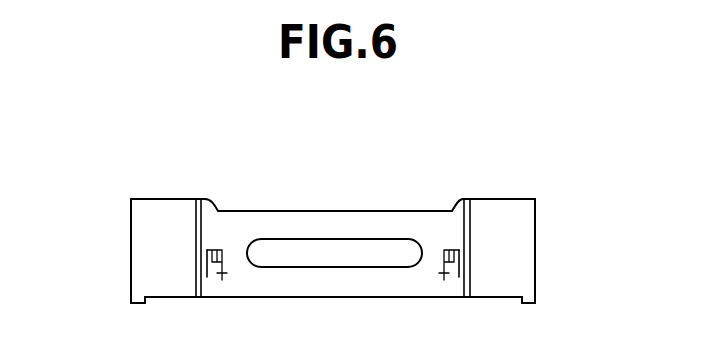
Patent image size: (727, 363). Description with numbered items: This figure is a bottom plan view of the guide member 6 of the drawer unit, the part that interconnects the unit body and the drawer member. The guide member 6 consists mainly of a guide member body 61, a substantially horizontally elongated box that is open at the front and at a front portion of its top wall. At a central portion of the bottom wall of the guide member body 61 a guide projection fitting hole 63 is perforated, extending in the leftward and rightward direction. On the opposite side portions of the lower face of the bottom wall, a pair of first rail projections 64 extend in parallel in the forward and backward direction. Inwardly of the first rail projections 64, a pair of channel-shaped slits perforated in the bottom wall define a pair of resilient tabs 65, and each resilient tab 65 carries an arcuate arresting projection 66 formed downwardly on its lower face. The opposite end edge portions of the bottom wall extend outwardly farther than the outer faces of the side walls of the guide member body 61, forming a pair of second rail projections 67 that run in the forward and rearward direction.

The guide member 6 is at (388, 197).
The guide member body 61 is at (345, 223).
The guide projection fitting hole 63 is at (303, 250).
The first rail projection 64 is at (202, 233).
The resilient tab 65 is at (220, 272).
The arcuate arresting projection 66 is at (220, 258).
The second rail projection 67 is at (140, 258).